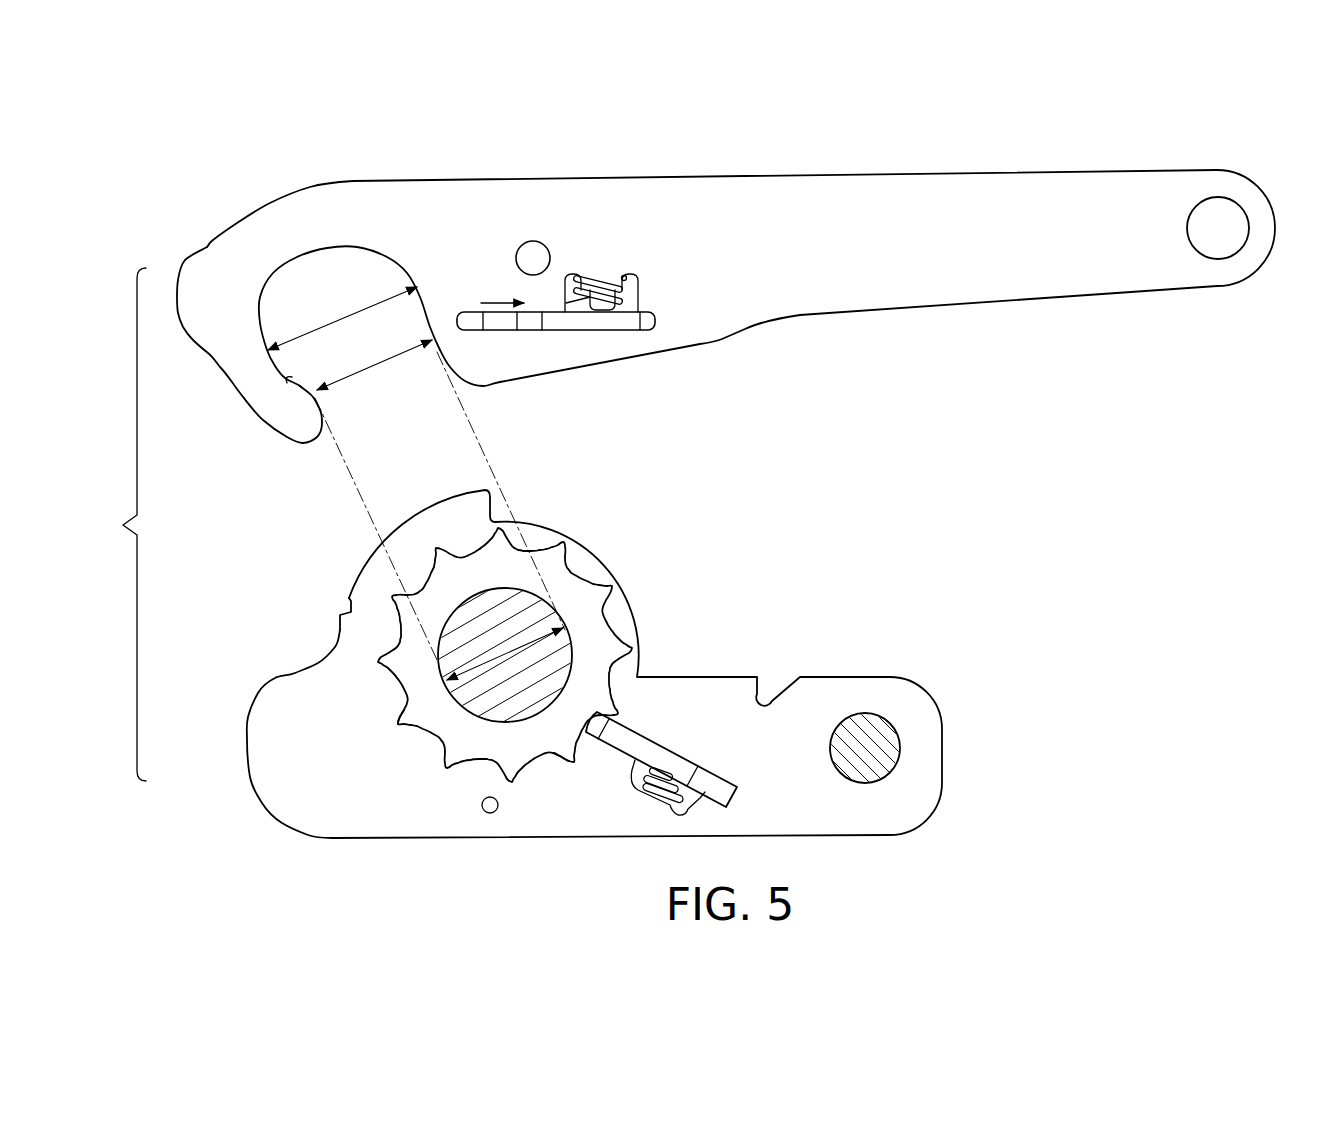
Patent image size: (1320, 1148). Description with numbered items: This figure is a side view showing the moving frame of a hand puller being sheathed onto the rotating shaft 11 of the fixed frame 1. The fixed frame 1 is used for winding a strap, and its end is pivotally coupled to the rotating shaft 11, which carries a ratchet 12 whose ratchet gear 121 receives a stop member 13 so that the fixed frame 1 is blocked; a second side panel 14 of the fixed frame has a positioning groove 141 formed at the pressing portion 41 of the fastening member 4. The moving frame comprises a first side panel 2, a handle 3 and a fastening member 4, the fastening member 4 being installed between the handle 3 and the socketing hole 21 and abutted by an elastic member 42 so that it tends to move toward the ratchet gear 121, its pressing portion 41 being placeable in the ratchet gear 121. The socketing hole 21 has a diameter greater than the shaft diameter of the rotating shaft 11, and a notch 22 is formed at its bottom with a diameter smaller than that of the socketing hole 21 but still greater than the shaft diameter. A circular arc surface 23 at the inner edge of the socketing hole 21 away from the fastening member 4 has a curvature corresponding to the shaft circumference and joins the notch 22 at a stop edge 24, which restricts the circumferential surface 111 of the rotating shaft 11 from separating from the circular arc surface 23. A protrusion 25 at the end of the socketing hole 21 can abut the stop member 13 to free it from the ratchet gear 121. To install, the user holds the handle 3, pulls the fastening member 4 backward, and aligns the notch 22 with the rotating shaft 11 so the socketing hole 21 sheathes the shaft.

The fixed frame 1 is at (261, 671).
The first side panel 2 is at (764, 186).
The handle 3 is at (1232, 237).
The fastening member 4 is at (583, 323).
The rotating shaft 11 is at (624, 648).
The ratchet 12 is at (423, 663).
The stop member 13 is at (652, 747).
The second side panel 14 is at (842, 820).
The socketing hole 21 is at (265, 323).
The notch 22 is at (393, 380).
The circular arc surface 23 is at (297, 378).
The stop edge 24 is at (313, 413).
The protrusion 25 is at (207, 250).
The pressing portion 41 is at (497, 327).
The elastic member 42 is at (603, 283).
The circumferential surface 111 is at (553, 747).
The ratchet gear 121 is at (405, 720).
The positioning groove 141 is at (347, 610).